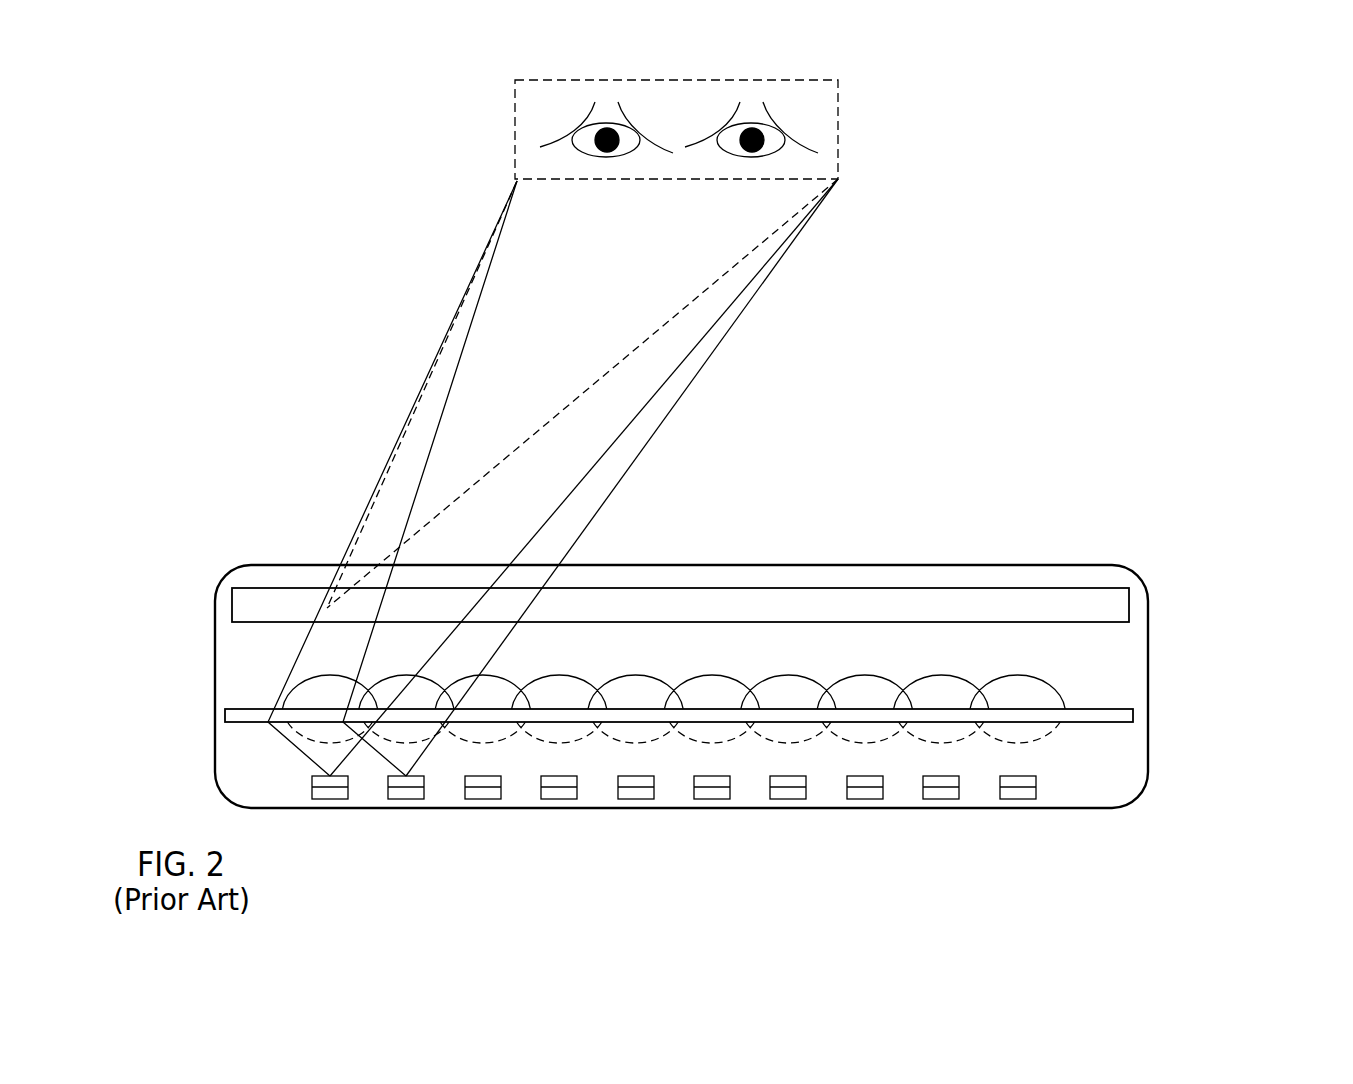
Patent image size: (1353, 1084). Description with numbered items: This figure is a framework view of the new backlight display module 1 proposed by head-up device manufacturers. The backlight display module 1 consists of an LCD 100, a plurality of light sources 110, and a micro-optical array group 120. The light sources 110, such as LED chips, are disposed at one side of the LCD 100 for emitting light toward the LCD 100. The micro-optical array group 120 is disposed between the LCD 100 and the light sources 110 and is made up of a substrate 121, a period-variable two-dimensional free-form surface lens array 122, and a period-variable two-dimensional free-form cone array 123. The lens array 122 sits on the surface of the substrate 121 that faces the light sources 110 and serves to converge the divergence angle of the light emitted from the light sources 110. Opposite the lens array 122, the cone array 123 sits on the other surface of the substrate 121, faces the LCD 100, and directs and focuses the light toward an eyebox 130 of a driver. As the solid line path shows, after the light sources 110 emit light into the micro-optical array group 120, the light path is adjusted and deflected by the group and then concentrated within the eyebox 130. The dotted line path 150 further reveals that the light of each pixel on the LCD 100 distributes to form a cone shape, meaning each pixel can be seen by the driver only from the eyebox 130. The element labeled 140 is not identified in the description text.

The backlight display module 1 is at (1024, 489).
The LCD 100 is at (1130, 599).
The light sources 110 is at (1036, 795).
The micro-optical array group 120 is at (766, 716).
The substrate 121 is at (1133, 712).
The period-variable 2D free-form surface lens array 122 is at (763, 764).
The period-variable 2D free-form cone array 123 is at (1068, 694).
The eyebox 130 is at (838, 120).
The light beams 140 is at (300, 664).
The dotted line path 150 is at (430, 520).